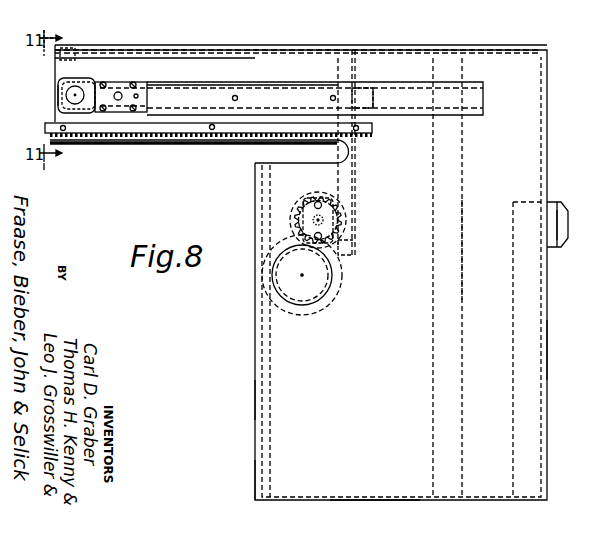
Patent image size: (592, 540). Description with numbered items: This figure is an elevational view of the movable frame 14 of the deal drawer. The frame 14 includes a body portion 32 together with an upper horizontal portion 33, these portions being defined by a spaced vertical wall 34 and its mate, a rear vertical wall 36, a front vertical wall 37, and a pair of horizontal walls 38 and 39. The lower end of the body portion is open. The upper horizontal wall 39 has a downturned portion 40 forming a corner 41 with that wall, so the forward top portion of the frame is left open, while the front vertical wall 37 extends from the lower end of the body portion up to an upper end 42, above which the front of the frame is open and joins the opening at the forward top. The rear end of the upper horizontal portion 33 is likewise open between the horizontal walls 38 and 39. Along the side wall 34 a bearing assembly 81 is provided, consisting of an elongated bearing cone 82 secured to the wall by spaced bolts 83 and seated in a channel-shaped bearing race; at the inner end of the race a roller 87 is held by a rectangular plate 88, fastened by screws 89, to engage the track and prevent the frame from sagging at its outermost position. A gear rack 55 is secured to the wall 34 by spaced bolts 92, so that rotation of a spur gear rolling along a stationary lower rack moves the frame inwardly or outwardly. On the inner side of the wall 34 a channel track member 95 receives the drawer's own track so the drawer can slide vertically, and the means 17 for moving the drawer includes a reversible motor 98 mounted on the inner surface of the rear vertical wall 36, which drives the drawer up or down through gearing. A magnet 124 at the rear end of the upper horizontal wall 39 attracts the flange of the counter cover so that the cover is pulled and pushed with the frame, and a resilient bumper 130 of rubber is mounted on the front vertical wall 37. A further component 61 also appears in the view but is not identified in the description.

The movable frame 14 is at (250, 479).
The means for moving the drawer 17 is at (330, 197).
The body portion 32 is at (372, 476).
The upper horizontal portion 33 is at (182, 57).
The vertical wall 34 is at (386, 393).
The rear vertical wall 36 is at (254, 397).
The front vertical wall 37 is at (548, 350).
The horizontal wall 38 is at (205, 145).
The upper horizontal wall 39 is at (235, 47).
The downturned portion 40 is at (353, 70).
The corner 41 is at (352, 48).
The upper end 42 is at (548, 202).
The gear rack 55 is at (150, 134).
The housing cover 61 is at (280, 163).
The bearing assembly 81 is at (362, 93).
The bearing cone 82 is at (366, 108).
The bolts 83 is at (237, 96).
The roller 87 is at (57, 92).
The rectangular plate 88 is at (88, 84).
The screws 89 is at (135, 86).
The bolts 92 is at (212, 124).
The channel track member 95 is at (463, 248).
The reversible motor 98 is at (314, 313).
The magnet 124 is at (60, 62).
The bumper 130 is at (553, 238).